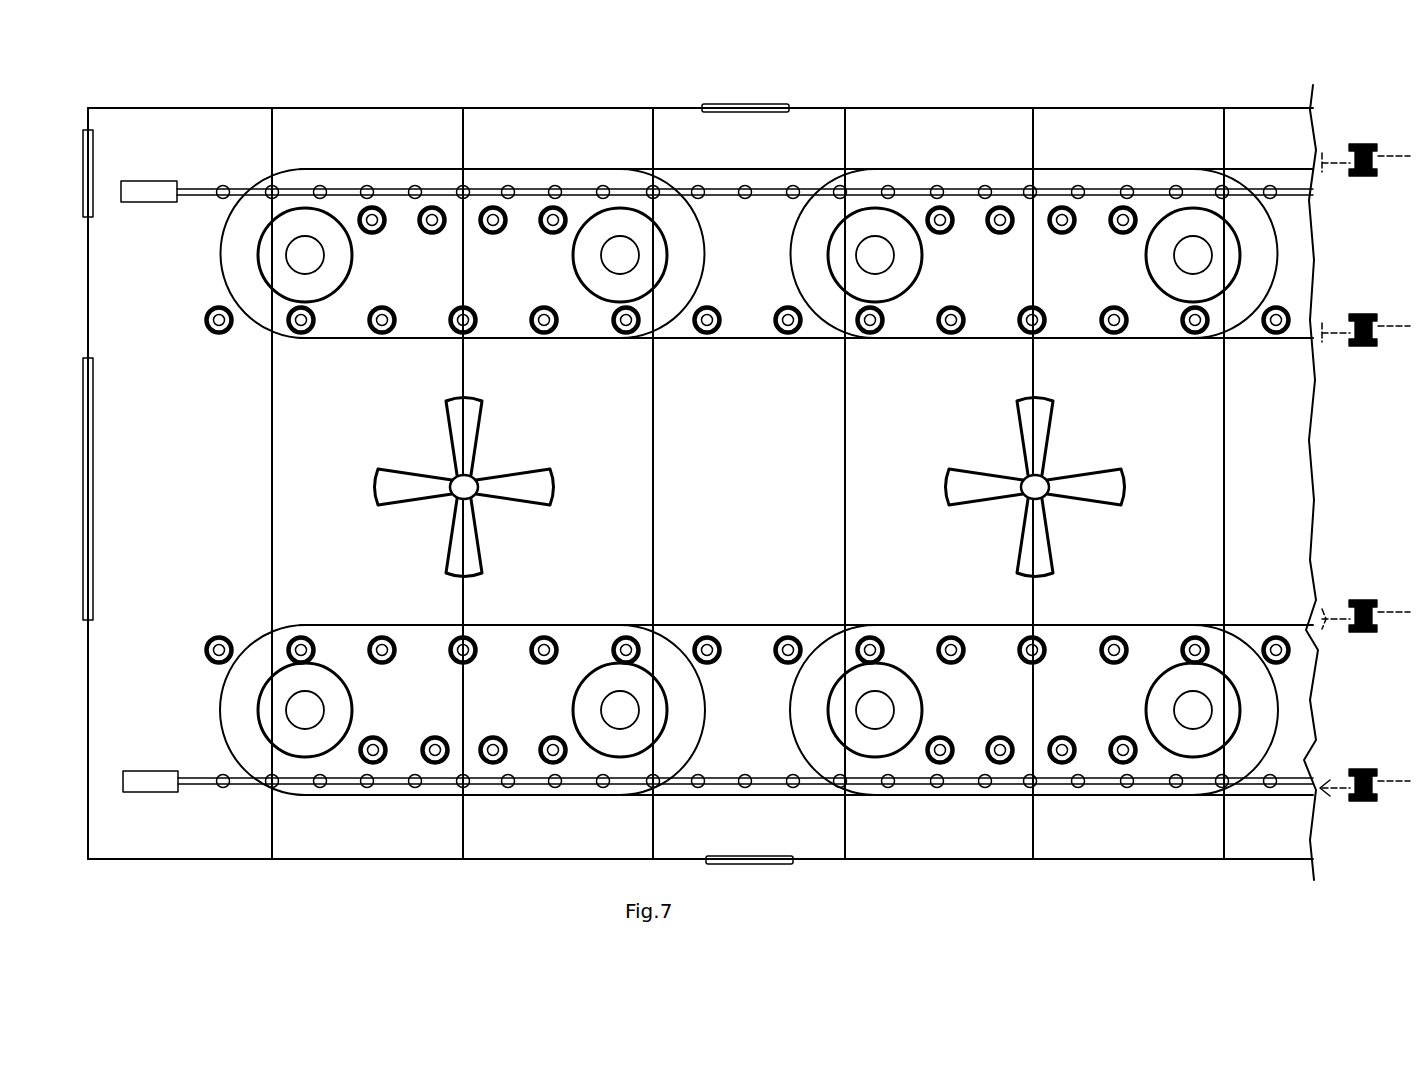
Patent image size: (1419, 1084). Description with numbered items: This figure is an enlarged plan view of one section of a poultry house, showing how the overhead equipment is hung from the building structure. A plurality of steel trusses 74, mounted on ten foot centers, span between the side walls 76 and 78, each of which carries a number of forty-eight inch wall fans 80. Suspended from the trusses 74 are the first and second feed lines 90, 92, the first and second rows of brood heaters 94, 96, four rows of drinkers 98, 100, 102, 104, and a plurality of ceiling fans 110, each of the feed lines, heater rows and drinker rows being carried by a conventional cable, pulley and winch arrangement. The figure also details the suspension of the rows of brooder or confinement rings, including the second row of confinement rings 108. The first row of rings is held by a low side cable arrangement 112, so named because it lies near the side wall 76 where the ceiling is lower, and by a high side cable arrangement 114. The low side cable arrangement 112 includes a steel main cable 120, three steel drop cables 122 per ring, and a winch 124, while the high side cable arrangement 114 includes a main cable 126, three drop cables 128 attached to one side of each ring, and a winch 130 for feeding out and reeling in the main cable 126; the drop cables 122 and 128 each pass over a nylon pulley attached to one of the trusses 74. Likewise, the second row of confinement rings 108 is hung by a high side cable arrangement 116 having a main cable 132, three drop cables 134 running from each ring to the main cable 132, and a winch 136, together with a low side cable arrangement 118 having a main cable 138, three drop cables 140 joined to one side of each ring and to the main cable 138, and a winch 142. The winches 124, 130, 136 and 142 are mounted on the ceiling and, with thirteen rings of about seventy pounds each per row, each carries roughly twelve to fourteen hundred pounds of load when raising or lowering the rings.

The steel trusses 74 is at (653, 483).
The side wall 76 is at (920, 108).
The side wall 78 is at (935, 860).
The wall fans 80 is at (765, 104).
The first feed line 90 is at (196, 188).
The second feed line 92 is at (205, 790).
The first row of brood heaters 94 is at (260, 258).
The second row of brood heaters 96 is at (350, 708).
The row of drinkers 98 is at (372, 236).
The row of drinkers 100 is at (219, 333).
The row of drinkers 102 is at (217, 650).
The row of drinkers 104 is at (496, 738).
The second row of confinement rings 108 is at (1280, 702).
The ceiling fans 110 is at (515, 498).
The low side cable arrangement 112 is at (1268, 169).
The high side cable arrangement 114 is at (1243, 338).
The high side cable arrangement 116 is at (1243, 625).
The low side cable arrangement 118 is at (1246, 796).
The main cable 120 is at (728, 169).
The drop cables 122 is at (300, 169).
The winch 124 is at (1366, 145).
The main cable 126 is at (700, 340).
The drop cables 128 is at (303, 338).
The winch 130 is at (1368, 315).
The main cable 132 is at (737, 625).
The drop cables 134 is at (305, 625).
The winch 136 is at (1368, 601).
The main cable 138 is at (735, 796).
The drop cables 140 is at (305, 796).
The winch 142 is at (1368, 770).